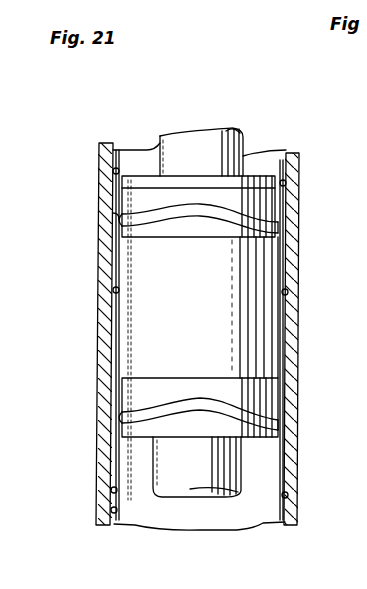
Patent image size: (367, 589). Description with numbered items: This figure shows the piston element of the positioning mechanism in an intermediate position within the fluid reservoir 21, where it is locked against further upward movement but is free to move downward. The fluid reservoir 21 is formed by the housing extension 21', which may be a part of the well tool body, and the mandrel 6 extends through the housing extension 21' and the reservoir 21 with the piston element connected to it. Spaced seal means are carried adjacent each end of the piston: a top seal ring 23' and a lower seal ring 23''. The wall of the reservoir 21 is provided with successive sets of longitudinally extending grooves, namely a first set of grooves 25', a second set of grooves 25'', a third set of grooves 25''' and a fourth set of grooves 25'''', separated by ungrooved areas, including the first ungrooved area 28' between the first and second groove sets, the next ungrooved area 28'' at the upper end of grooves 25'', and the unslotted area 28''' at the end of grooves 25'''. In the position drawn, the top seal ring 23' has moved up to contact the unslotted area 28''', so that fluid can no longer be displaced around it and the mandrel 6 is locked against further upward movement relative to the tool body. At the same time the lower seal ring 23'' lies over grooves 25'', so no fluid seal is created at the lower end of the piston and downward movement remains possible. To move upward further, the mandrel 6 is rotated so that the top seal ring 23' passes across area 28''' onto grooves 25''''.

The mandrel 6 is at (233, 133).
The fluid reservoir 21 is at (200, 335).
The housing extension 21' is at (203, 350).
The top seal ring 23' is at (235, 206).
The lower seal ring 23'' is at (233, 407).
The first set of longitudinally extending grooves 25' is at (199, 513).
The second set of longitudinally extending grooves 25'' is at (200, 447).
The third set of longitudinally extending grooves 25''' is at (196, 256).
The fourth set of longitudinally extending grooves 25'''' is at (200, 177).
The first ungrooved area 28' is at (199, 487).
The second ungrooved area 28'' is at (201, 292).
The third unslotted area 28''' is at (200, 198).